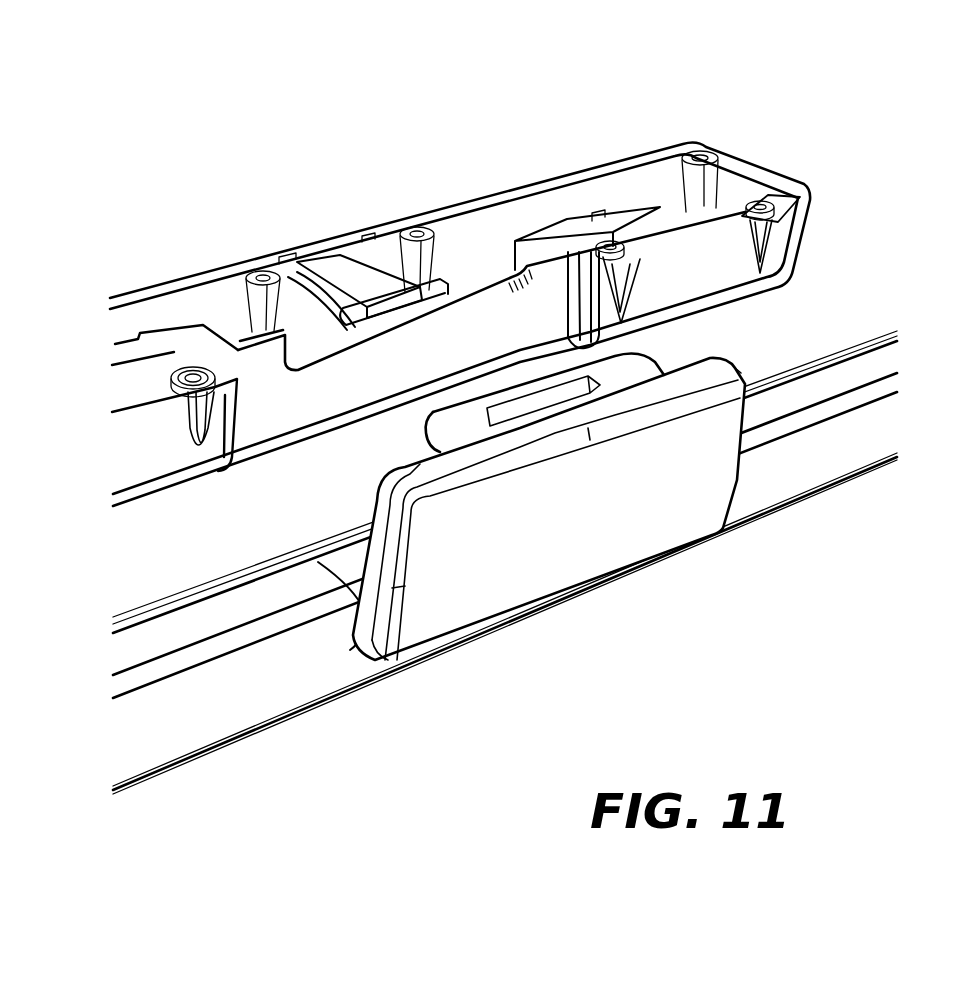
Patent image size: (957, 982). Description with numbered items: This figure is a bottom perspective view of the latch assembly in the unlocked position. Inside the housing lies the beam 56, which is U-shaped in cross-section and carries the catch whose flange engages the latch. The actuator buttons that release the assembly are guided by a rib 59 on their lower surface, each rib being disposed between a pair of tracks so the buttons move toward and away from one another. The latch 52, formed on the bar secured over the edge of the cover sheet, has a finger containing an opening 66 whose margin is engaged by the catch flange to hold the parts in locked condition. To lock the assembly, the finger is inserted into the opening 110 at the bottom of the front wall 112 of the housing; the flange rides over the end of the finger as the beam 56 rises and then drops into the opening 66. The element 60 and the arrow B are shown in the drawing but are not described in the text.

The latch 52 is at (680, 517).
The beam 56 is at (490, 285).
The rib 59 is at (653, 231).
The bracket 60 is at (327, 277).
The opening 66 is at (516, 412).
The opening 110 is at (463, 315).
The front wall 112 is at (543, 310).
The direction B is at (567, 530).